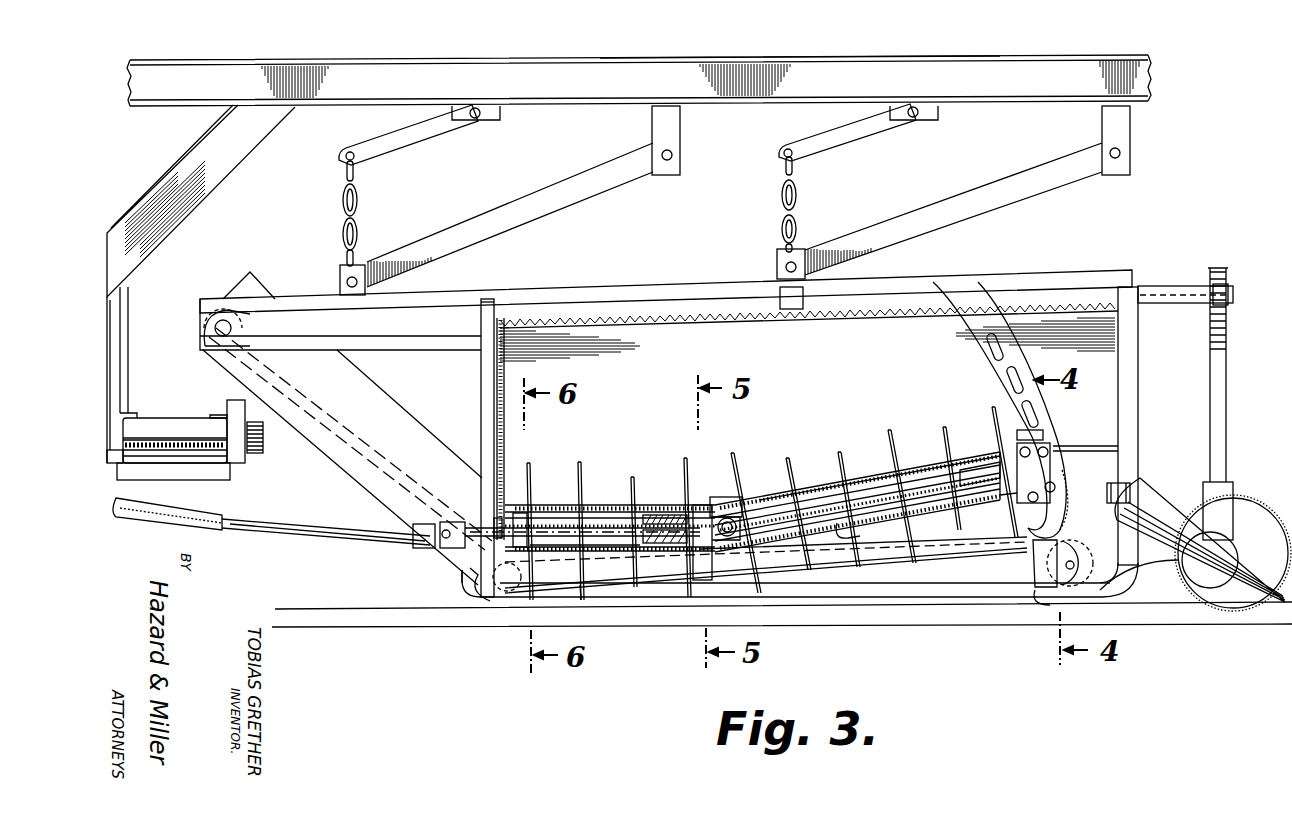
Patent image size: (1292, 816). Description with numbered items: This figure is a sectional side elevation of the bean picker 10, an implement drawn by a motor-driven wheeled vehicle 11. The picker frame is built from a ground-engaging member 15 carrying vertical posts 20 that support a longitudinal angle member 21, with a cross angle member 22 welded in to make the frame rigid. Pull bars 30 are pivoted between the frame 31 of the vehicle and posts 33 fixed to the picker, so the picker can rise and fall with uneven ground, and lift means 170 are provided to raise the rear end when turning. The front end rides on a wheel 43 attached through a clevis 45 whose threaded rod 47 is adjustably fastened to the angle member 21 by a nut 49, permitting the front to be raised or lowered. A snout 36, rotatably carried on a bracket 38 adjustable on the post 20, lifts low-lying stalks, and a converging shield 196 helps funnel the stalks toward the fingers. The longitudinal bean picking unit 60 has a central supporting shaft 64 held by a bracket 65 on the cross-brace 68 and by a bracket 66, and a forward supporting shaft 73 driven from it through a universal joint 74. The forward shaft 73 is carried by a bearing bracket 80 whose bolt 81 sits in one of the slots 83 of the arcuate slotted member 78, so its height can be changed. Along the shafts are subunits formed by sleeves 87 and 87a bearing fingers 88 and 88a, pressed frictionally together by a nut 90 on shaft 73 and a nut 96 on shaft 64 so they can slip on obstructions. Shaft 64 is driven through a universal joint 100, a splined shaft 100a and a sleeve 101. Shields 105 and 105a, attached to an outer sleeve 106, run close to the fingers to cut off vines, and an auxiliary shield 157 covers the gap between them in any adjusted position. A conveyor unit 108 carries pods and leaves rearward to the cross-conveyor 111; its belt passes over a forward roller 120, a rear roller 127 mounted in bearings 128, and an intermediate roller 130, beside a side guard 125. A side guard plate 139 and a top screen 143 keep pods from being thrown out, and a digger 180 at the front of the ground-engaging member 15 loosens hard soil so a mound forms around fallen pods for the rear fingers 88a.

The bean picker 10 is at (462, 609).
The wheeled vehicle 11 is at (1065, 59).
The ground-engaging member 15 is at (1117, 593).
The vertical post 20 is at (482, 395).
The longitudinal angle member 21 is at (1040, 278).
The cross angle member 22 is at (512, 300).
The pull bar 30 is at (528, 210).
The frame of vehicle 31 is at (921, 68).
The post 33 is at (340, 272).
The snout 36 is at (1240, 600).
The bracket 38 is at (1127, 478).
The wheel 43 is at (1240, 513).
The clevis 45 is at (1233, 492).
The threaded rod 47 is at (1227, 380).
The nut 49 is at (1235, 294).
The longitudinal bean picking unit 60 is at (600, 505).
The central supporting shaft 64 is at (660, 514).
The bracket 65 is at (492, 515).
The bracket 66 is at (699, 508).
The cross-brace 68 is at (478, 575).
The forward supporting shaft 73 is at (978, 480).
The universal joint 74 is at (718, 530).
The arcuate slotted member 78 is at (990, 350).
The bracket 80 is at (1053, 462).
The bolt 81 is at (1048, 450).
The slot 83 is at (1004, 356).
The sleeve 87 is at (805, 488).
The sleeve 87a is at (566, 540).
The finger 88 is at (742, 462).
The finger 88a is at (583, 592).
The nut 90 is at (1027, 490).
The nut 96 is at (527, 515).
The universal joint 100 is at (433, 538).
The splined shaft 100a is at (258, 522).
The sleeve 101 is at (222, 503).
The shield 105 is at (912, 475).
The shield 105a is at (676, 502).
The outer sleeve 106 is at (846, 522).
The conveyor unit 108 is at (372, 437).
The cross-conveyor 111 is at (166, 432).
The roller 120 is at (1075, 557).
The side guard 125 is at (385, 398).
The rear roller 127 is at (214, 326).
The bearing 128 is at (206, 338).
The roller 130 is at (513, 603).
The side guard plate 139 is at (807, 347).
The top screen 143 is at (897, 302).
The auxiliary shield 157 is at (715, 498).
The lift means 170 is at (388, 140).
The digger 180 is at (1044, 602).
The converging shield 196 is at (1120, 438).